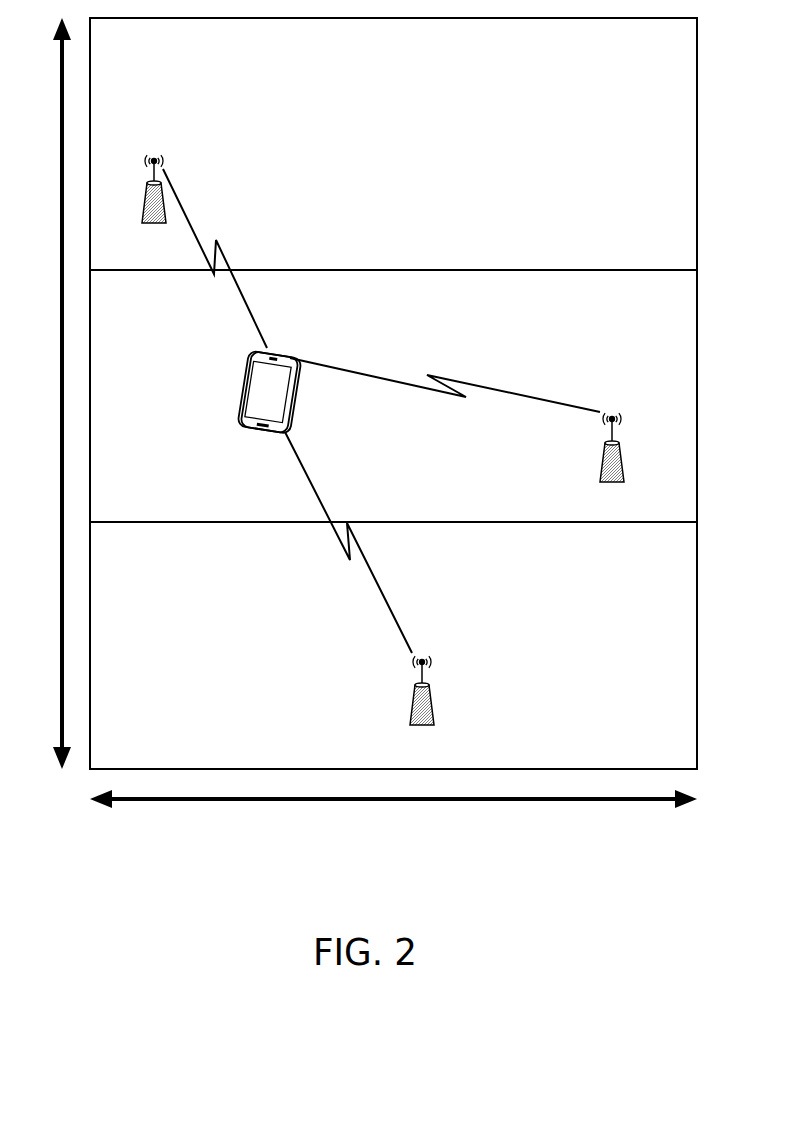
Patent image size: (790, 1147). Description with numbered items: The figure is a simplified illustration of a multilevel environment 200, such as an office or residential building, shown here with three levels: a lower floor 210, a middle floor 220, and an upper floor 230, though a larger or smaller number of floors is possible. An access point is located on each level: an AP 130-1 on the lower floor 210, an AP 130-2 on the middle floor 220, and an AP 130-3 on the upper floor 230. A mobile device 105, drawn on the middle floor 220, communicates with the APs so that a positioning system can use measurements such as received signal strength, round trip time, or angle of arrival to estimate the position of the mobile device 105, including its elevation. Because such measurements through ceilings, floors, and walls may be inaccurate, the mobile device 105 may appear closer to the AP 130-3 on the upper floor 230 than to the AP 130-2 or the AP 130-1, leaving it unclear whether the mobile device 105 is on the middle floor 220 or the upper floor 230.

The multilevel environment 200 is at (124, 865).
The upper floor 230 is at (663, 44).
The middle floor 220 is at (663, 296).
The lower floor 210 is at (663, 548).
The mobile device 105 is at (247, 356).
The AP on the lower floor 130-1 is at (427, 726).
The AP on the middle floor 130-2 is at (617, 483).
The AP on the upper floor 130-3 is at (162, 224).